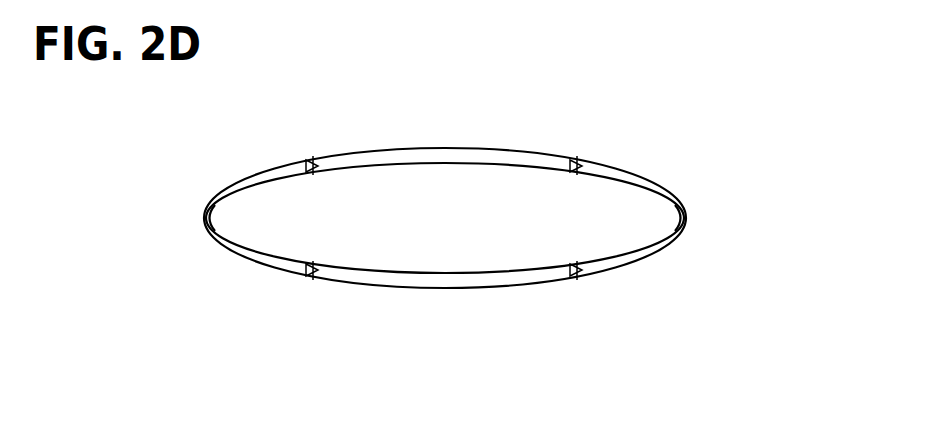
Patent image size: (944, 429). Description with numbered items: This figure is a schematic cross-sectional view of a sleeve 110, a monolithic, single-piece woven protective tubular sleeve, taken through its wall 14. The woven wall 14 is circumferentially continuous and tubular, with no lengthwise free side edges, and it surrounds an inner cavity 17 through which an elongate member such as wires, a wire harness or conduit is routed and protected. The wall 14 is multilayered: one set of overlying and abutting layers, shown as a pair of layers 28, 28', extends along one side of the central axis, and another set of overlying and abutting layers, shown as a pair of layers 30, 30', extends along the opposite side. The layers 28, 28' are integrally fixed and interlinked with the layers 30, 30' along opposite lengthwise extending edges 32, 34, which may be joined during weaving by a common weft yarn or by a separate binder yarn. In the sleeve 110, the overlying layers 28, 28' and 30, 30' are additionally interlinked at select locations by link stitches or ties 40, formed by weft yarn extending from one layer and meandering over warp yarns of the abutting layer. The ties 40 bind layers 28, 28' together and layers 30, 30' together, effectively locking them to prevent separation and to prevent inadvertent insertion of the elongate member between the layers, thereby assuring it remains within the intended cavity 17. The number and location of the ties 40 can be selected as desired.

The sleeve 110 is at (537, 109).
The woven wall 14 is at (570, 140).
The inner cavity 17 is at (555, 235).
The layer 28 is at (445, 148).
The layer 28' is at (445, 190).
The layer 30 is at (445, 280).
The layer 30' is at (445, 243).
The lengthwise extending edge 32 is at (203, 217).
The lengthwise extending edge 34 is at (688, 218).
The ties 40 is at (304, 161).